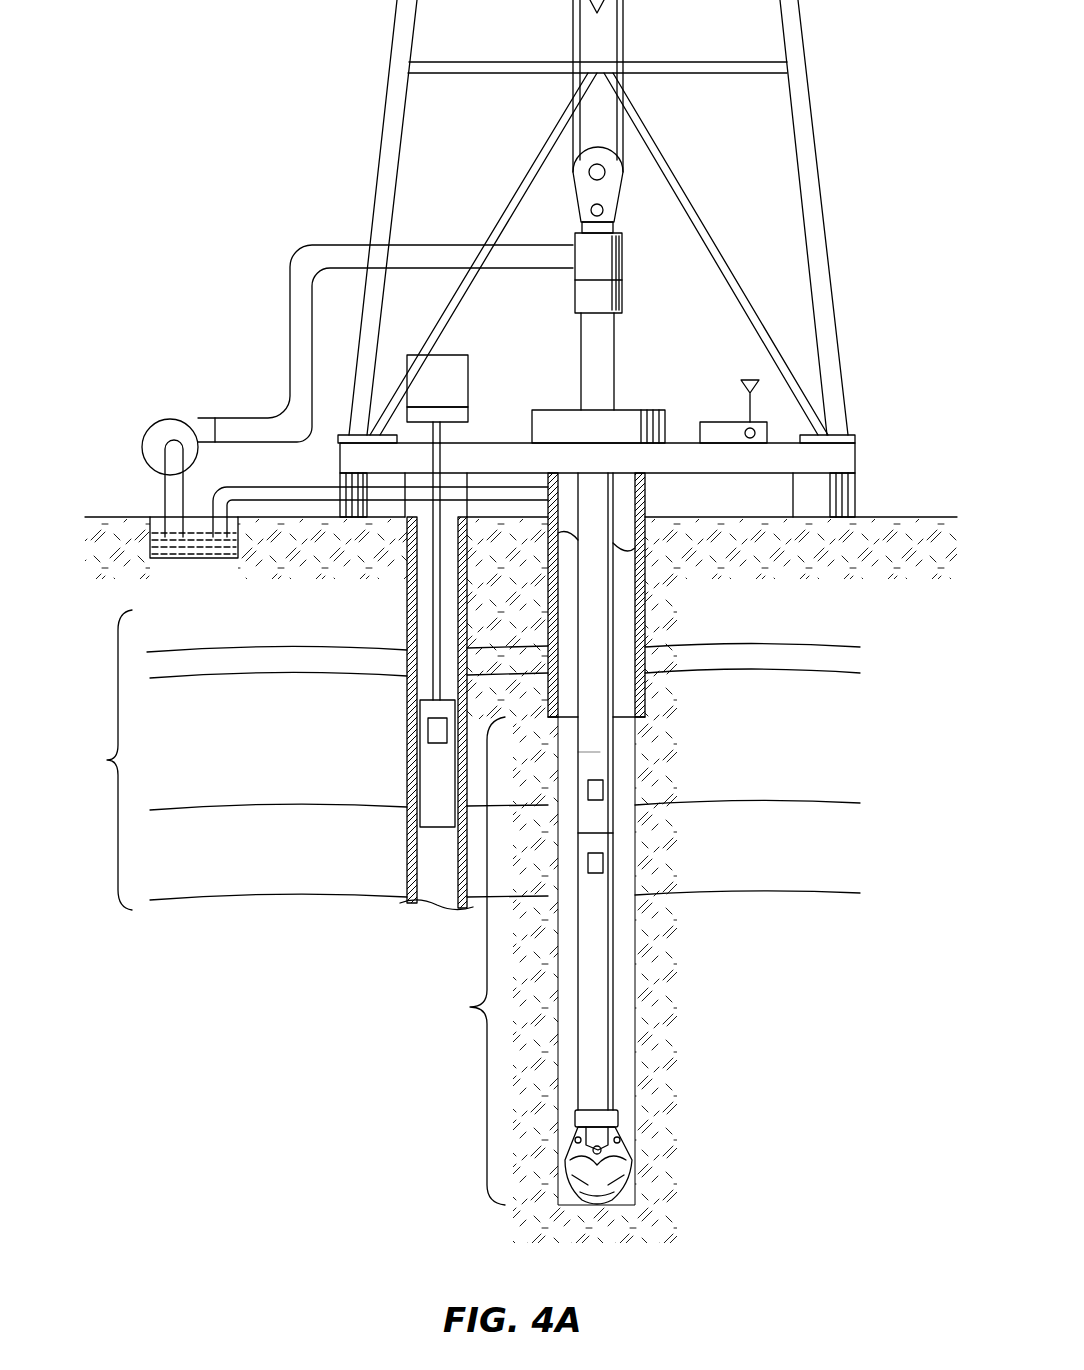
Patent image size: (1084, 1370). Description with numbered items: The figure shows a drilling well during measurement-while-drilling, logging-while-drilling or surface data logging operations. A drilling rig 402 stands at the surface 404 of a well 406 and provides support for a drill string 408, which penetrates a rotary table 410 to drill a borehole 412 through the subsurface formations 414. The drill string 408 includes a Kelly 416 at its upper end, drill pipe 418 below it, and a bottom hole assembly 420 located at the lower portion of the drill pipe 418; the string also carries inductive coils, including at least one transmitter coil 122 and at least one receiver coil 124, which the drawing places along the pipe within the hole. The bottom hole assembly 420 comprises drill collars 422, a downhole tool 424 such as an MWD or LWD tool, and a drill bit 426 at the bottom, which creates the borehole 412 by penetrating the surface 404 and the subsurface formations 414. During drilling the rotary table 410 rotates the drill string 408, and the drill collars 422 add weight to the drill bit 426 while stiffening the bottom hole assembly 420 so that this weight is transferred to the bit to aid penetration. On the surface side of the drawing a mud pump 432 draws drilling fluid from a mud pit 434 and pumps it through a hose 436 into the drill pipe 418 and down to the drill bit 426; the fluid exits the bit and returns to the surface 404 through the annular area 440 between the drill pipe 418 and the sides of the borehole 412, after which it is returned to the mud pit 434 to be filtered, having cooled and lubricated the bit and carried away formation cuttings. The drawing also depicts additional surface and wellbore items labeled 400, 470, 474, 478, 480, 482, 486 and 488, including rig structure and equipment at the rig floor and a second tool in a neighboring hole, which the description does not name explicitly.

The transmitter coil 122 is at (614, 956).
The receiver coil 124 is at (580, 993).
The sensor 400 is at (604, 790).
The drilling rig 402 is at (822, 159).
The surface 404 is at (888, 517).
The well 406 is at (657, 510).
The drill string 408 is at (616, 600).
The rotary table 410 is at (551, 410).
The borehole 412 is at (408, 641).
The subsurface formations 414 is at (452, 760).
The Kelly 416 is at (616, 336).
The drill pipe 418 is at (602, 752).
The bottom hole assembly 420 is at (462, 961).
The drill collars 422 is at (648, 708).
The downhole tool 424 is at (600, 846).
The drill bit 426 is at (620, 1158).
The mud pump 432 is at (173, 418).
The mud pit 434 is at (161, 522).
The hose 436 is at (290, 318).
The annular area 440 is at (623, 770).
The wireline tool 470 is at (421, 765).
The wireline 474 is at (434, 612).
The control unit 478 is at (719, 422).
The surface equipment 480 is at (457, 356).
The antenna/communication link 482 is at (756, 431).
The rig floor 486 is at (858, 458).
The derrick brace 488 is at (812, 97).